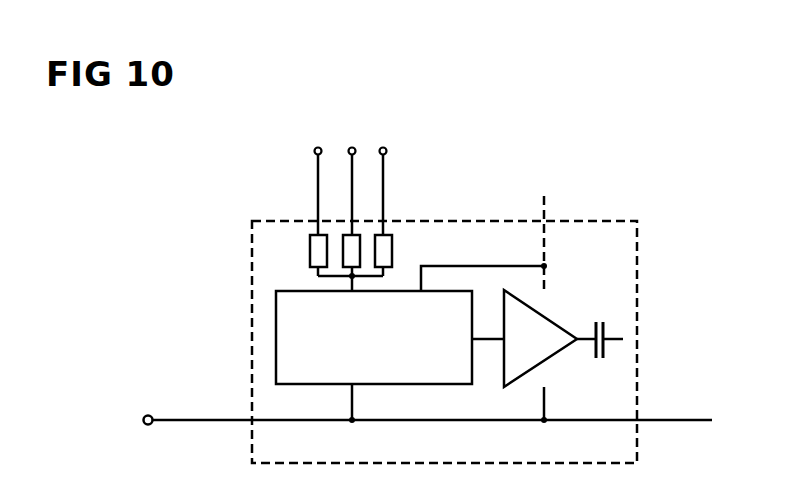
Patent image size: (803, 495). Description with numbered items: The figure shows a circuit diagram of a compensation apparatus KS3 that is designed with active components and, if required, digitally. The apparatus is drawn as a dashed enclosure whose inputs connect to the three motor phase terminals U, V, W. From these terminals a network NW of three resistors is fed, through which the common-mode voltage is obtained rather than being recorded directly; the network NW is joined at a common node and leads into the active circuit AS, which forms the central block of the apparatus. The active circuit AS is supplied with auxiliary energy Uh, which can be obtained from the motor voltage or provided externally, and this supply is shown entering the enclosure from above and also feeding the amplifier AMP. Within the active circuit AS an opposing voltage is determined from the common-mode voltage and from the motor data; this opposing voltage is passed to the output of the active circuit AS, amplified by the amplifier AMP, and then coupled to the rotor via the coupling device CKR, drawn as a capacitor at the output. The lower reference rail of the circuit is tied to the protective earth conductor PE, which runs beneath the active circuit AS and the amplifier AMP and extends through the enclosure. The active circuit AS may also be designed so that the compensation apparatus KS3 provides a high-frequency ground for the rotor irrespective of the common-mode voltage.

The protective earth conductor PE is at (421, 402).
The compensation apparatus KS3 is at (250, 249).
The phase terminal U is at (318, 178).
The phase terminal V is at (352, 178).
The phase terminal W is at (384, 178).
The network NW is at (395, 253).
The active circuit AS is at (411, 343).
The auxiliary energy Uh is at (544, 229).
The amplifier AMP is at (540, 356).
The coupling device CKR is at (599, 322).